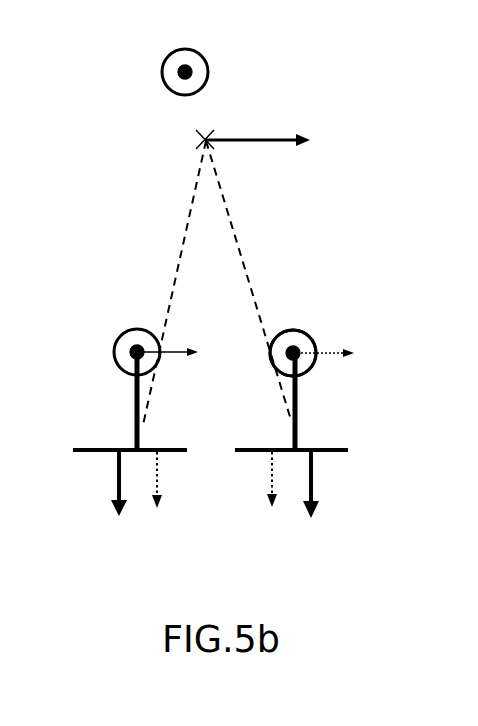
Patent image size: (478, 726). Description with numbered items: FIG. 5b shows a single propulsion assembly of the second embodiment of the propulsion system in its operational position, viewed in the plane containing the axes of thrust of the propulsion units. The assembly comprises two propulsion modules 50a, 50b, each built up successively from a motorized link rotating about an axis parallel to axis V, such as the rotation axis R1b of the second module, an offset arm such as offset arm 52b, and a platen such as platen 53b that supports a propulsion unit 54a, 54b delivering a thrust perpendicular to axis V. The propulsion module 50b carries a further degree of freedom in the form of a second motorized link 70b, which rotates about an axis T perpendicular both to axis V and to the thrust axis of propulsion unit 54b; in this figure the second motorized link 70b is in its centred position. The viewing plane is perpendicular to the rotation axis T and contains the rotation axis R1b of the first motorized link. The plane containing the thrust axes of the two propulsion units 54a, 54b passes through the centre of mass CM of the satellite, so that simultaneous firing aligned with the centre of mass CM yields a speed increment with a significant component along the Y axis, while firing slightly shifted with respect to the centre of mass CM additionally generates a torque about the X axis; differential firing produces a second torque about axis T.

The rotation axis of the second motorized link T is at (170, 72).
The centre of mass CM is at (196, 142).
The X axis X is at (259, 121).
The propulsion module 50a is at (131, 301).
The propulsion module 50b is at (302, 255).
The second motorized link 70b is at (302, 330).
The rotation axis of the first motorized link R1b is at (335, 348).
The offset arm 52b is at (297, 422).
The platen 53b is at (345, 453).
The propulsion unit 54a is at (113, 517).
The propulsion unit 54b is at (317, 517).